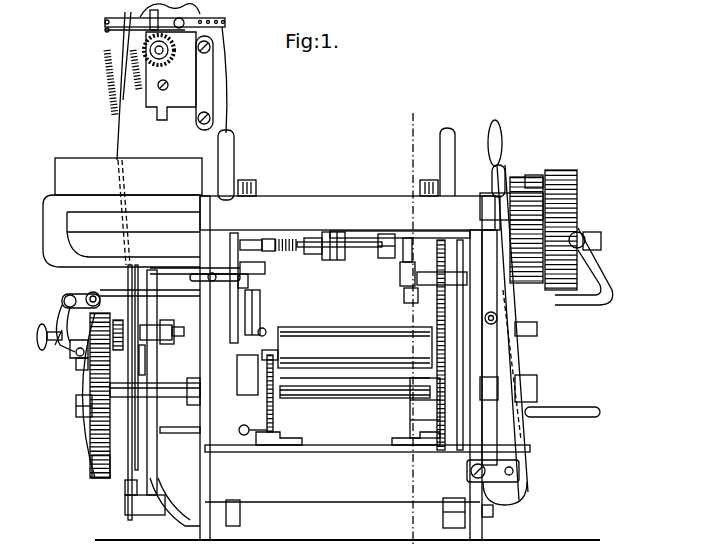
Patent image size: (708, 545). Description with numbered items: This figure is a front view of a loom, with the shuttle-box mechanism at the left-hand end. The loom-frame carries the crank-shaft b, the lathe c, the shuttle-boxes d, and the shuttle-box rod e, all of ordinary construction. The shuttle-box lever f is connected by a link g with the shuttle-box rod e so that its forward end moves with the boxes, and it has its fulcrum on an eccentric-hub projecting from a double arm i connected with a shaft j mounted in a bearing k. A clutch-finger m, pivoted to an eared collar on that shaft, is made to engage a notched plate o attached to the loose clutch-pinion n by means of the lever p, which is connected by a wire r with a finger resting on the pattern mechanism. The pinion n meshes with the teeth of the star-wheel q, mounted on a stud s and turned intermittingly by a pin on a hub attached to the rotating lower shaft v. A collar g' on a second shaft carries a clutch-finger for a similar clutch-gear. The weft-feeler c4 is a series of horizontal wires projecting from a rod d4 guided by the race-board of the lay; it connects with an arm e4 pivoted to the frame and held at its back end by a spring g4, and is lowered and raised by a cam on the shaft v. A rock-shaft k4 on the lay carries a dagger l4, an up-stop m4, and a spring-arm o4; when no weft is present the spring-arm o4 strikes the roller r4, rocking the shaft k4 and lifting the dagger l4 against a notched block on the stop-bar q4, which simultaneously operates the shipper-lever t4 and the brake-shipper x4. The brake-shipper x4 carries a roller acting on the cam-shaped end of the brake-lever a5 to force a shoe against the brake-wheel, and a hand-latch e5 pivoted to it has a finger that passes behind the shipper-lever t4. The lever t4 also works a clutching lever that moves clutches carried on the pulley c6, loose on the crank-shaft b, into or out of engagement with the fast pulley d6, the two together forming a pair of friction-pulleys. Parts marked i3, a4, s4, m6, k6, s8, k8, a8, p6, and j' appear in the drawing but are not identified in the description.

The bar i3 is at (104, 22).
The wire r is at (119, 140).
The shuttle-boxes d is at (56, 178).
The beam a4 is at (350, 213).
The stop-bar q4 is at (372, 231).
The weft-feeler c4 is at (256, 189).
The lathe c is at (447, 162).
The rock-shaft k4 is at (345, 246).
The spring s4 is at (288, 251).
The dagger l4 is at (335, 260).
The up-stop m4 is at (386, 258).
The roller r4 is at (401, 274).
The spring-arm o4 is at (404, 296).
The bracket m6 is at (259, 275).
The bar k6 is at (261, 318).
The screw s8 is at (264, 330).
The block k8 is at (279, 357).
The cylinder a8 is at (355, 347).
The lower shaft v is at (355, 397).
The rod d4 is at (437, 311).
The spring g4 is at (274, 432).
The arm e4 is at (260, 446).
The link p6 is at (192, 278).
The lever p is at (62, 302).
The clutch-finger m is at (73, 352).
The notched plate o is at (75, 361).
The clutch-pinion n is at (82, 369).
The shaft j is at (51, 352).
The bearing k is at (114, 335).
The star-wheel q is at (97, 395).
The stud s is at (77, 407).
The link g is at (88, 466).
The shuttle-box rod e is at (126, 489).
The collar g' is at (160, 382).
The shuttle-box lever f is at (163, 337).
The block j' is at (181, 327).
The double arm i is at (143, 361).
The shipper-lever t4 is at (500, 160).
The hand-latch e5 is at (492, 178).
The brake-shipper x4 is at (498, 430).
The fast pulley d6 is at (526, 230).
The pulley c6 is at (551, 230).
The crank-shaft b is at (601, 241).
The brake-lever a5 is at (609, 293).